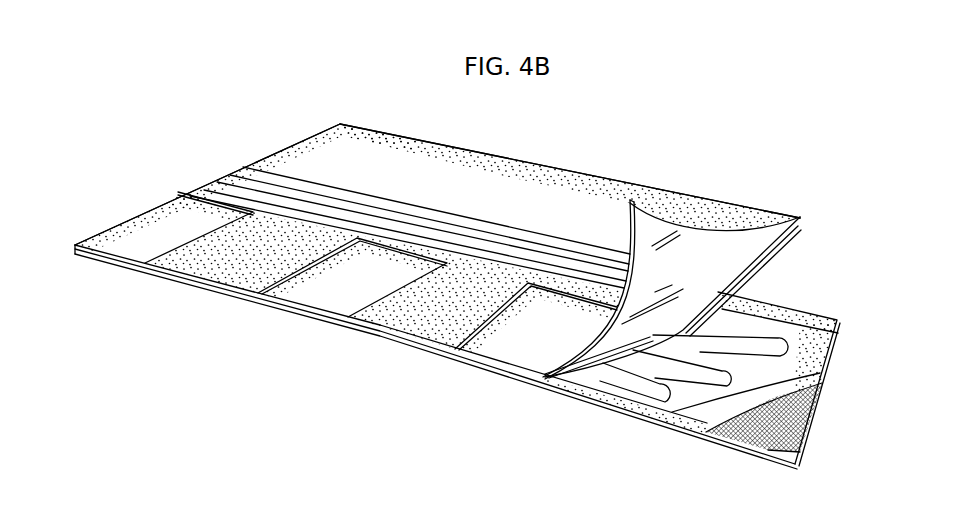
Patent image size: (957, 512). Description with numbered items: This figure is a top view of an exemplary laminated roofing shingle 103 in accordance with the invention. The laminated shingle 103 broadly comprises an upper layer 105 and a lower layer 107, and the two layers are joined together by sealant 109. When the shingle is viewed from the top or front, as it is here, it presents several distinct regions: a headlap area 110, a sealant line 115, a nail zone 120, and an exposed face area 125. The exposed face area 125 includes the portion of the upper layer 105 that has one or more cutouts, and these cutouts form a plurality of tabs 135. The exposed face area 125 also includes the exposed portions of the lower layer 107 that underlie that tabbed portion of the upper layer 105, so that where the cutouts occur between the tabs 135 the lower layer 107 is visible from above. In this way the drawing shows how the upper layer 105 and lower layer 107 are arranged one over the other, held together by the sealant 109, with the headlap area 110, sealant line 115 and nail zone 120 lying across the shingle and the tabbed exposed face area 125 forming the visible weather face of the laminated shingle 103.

The laminated roofing shingle 103 is at (588, 170).
The upper layer 105 is at (800, 221).
The lower layer 107 is at (808, 332).
The sealant 109 is at (770, 333).
The headlap area 110 is at (332, 143).
The sealant line 115 is at (238, 168).
The nail zone 120 is at (205, 184).
The exposed face area 125 is at (112, 218).
The tabs 135 is at (223, 268).